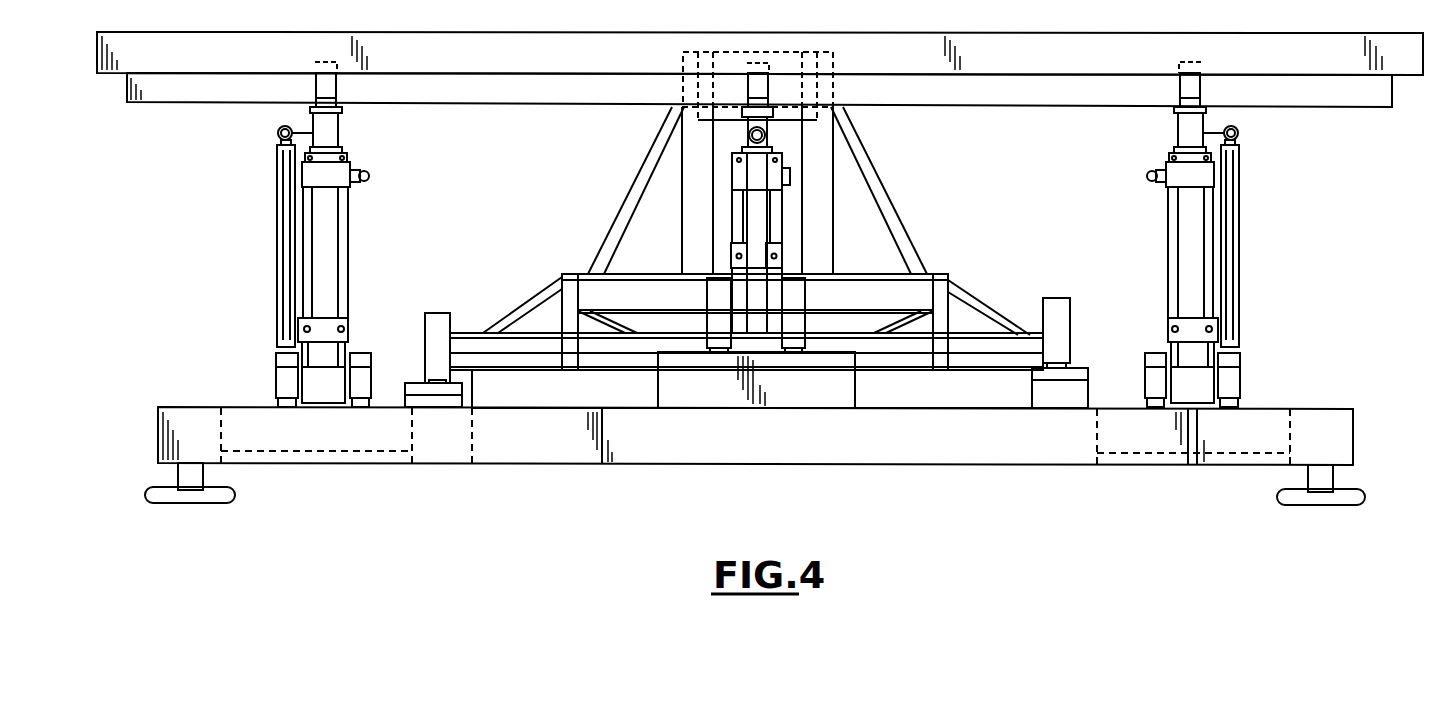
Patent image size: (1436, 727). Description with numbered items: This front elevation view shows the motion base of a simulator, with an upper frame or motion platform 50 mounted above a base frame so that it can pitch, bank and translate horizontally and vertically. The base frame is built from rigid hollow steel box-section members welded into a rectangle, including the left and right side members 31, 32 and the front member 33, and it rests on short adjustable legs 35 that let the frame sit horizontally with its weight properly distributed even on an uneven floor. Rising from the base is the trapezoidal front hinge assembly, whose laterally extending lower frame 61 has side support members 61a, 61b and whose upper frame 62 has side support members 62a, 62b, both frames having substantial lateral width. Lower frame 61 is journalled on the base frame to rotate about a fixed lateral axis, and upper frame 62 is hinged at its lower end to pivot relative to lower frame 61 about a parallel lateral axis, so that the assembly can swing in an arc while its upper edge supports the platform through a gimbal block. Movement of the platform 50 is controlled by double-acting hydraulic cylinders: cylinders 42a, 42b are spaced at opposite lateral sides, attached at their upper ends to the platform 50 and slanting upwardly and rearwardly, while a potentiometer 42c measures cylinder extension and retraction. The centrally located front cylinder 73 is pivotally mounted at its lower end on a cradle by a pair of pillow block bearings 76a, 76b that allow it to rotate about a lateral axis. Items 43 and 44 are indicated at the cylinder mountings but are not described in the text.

The upper frame or motion platform 50 is at (150, 105).
The double-acting hydraulic cylinder 42a is at (1193, 230).
The double-acting hydraulic cylinder 42b is at (325, 233).
The potentiometer 42c is at (282, 199).
The cylinder mounting clamp 43 is at (1255, 366).
The cylinder mounting clamp 44 is at (380, 355).
The upper frame 62 is at (825, 143).
The side support member 62a is at (890, 193).
The side support member 62b is at (632, 178).
The hydraulic cylinder 73 is at (778, 210).
The lower frame 61 is at (1013, 350).
The side support member 61a is at (985, 297).
The side support member 61b is at (530, 298).
The pillow block bearing 76a is at (805, 302).
The pillow block bearing 76b is at (707, 300).
The side member 31 is at (1323, 418).
The side member 32 is at (198, 420).
The front member 33 is at (840, 455).
The adjustable leg 35 is at (178, 475).